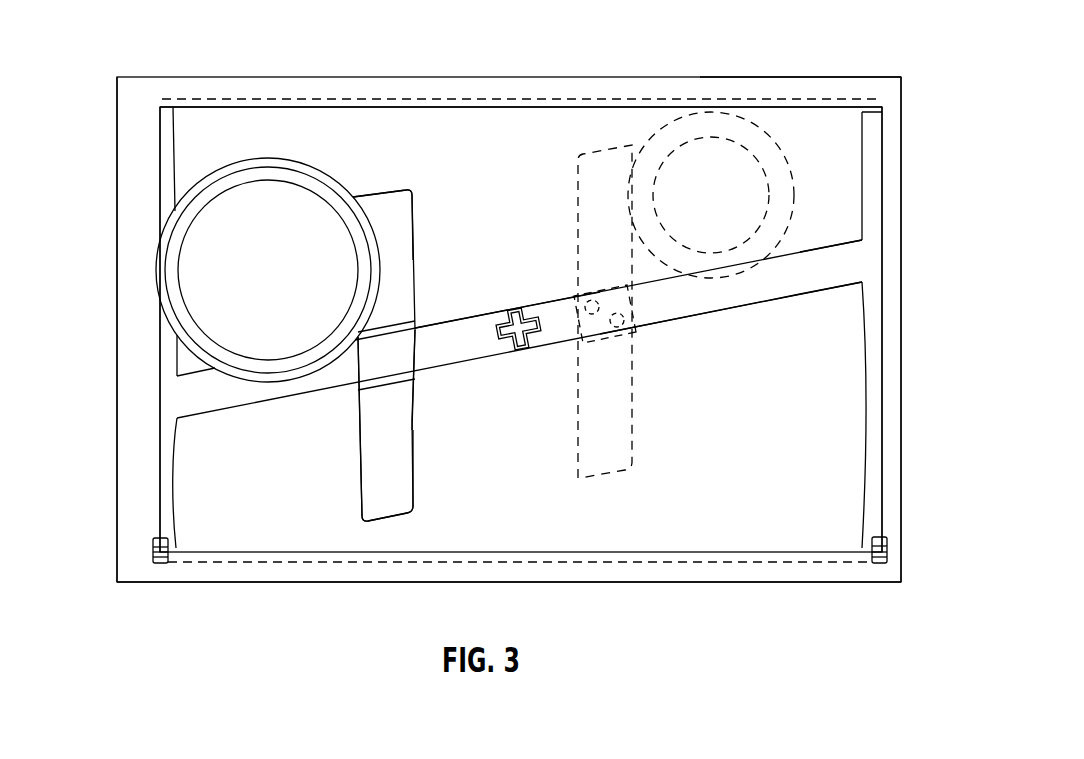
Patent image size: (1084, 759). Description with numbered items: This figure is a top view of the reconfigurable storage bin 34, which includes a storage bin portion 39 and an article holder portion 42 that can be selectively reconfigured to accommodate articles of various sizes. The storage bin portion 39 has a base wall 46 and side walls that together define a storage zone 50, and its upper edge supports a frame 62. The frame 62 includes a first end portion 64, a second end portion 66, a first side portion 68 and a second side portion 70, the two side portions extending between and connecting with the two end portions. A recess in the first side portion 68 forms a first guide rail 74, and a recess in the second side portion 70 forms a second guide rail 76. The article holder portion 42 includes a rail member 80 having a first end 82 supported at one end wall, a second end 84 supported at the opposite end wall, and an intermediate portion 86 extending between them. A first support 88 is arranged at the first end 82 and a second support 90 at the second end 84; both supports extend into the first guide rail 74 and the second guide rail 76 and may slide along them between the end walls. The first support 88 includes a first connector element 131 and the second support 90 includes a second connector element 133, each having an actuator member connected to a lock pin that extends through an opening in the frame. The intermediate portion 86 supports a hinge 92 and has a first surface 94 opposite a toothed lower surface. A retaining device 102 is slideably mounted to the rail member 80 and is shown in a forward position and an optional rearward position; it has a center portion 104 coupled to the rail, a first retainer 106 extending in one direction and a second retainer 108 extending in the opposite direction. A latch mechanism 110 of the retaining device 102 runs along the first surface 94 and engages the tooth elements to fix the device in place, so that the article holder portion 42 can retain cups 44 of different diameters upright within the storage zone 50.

The reconfigurable storage bin 34 is at (135, 40).
The storage bin portion 39 is at (907, 327).
The article holder portion 42 is at (442, 380).
The cup 44 is at (712, 128).
The base wall 46 is at (777, 492).
The storage zone 50 is at (838, 424).
The frame 62 is at (810, 87).
The first end portion 64 is at (890, 190).
The second end portion 66 is at (135, 265).
The first side portion 68 is at (243, 97).
The second side portion 70 is at (660, 582).
The first guide rail 74 is at (493, 100).
The second guide rail 76 is at (510, 560).
The rail member 80 is at (718, 320).
The first end 82 is at (858, 264).
The second end 84 is at (178, 395).
The intermediate portion 86 is at (657, 325).
The first support 88 is at (872, 130).
The second support 90 is at (165, 140).
The hinge 92 is at (515, 316).
The first surface 94 is at (470, 333).
The retaining device 102 is at (390, 187).
The center portion 104 is at (398, 353).
The first retainer 106 is at (400, 208).
The second retainer 108 is at (398, 493).
The latch mechanism 110 is at (378, 387).
The first connector element 131 is at (888, 548).
The second connector element 133 is at (152, 548).